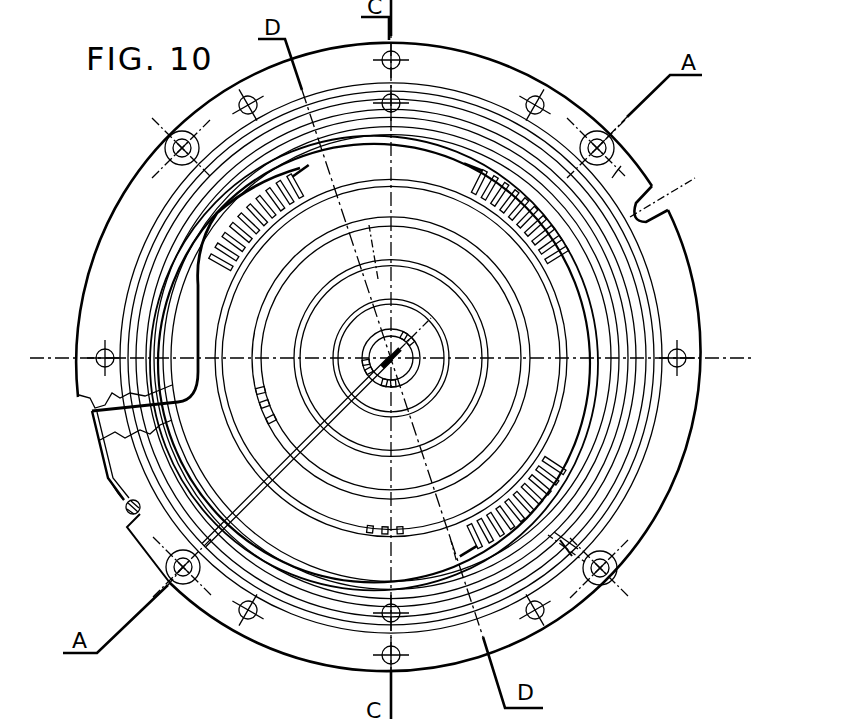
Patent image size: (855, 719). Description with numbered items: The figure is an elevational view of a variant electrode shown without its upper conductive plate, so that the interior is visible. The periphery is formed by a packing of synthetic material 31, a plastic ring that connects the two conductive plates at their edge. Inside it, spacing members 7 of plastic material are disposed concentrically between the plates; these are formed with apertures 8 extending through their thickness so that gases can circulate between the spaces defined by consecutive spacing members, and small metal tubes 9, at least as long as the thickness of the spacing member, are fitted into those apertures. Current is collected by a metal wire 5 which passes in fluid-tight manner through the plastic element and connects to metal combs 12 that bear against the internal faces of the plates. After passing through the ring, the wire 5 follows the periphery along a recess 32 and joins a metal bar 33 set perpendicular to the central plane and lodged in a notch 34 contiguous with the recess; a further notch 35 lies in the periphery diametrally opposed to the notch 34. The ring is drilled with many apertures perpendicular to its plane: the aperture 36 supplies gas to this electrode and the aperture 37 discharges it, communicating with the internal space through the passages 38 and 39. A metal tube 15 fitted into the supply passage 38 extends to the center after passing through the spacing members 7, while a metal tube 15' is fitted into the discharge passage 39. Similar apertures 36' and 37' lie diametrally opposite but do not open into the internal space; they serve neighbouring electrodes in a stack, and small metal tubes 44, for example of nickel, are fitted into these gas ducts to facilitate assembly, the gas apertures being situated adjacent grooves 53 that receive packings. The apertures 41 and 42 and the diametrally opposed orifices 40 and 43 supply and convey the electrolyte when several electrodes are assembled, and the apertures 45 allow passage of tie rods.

The metal wire 5 is at (88, 410).
The spacing members 7 is at (410, 336).
The apertures 8 is at (258, 400).
The small metal tubes 9 is at (272, 412).
The metal combs 12 is at (590, 470).
The metal tube 15 is at (316, 515).
The metal tube 15' is at (579, 609).
The packing of synthetic material 31 is at (135, 215).
The recess 32 is at (95, 436).
The metal bar 33 is at (128, 510).
The notch 34 is at (115, 497).
The notch 35 is at (658, 196).
The aperture 36 is at (183, 596).
The aperture 36' is at (653, 146).
The aperture 37 is at (636, 568).
The aperture 37' is at (150, 148).
The supply passage 38 is at (233, 540).
The discharge passage 39 is at (580, 548).
The orifice 40 is at (385, 96).
The aperture 41 is at (395, 616).
The aperture 42 is at (383, 665).
The orifice 43 is at (405, 52).
The small metal tubes 44 is at (165, 570).
The apertures 45 is at (682, 352).
The grooves 53 is at (597, 140).